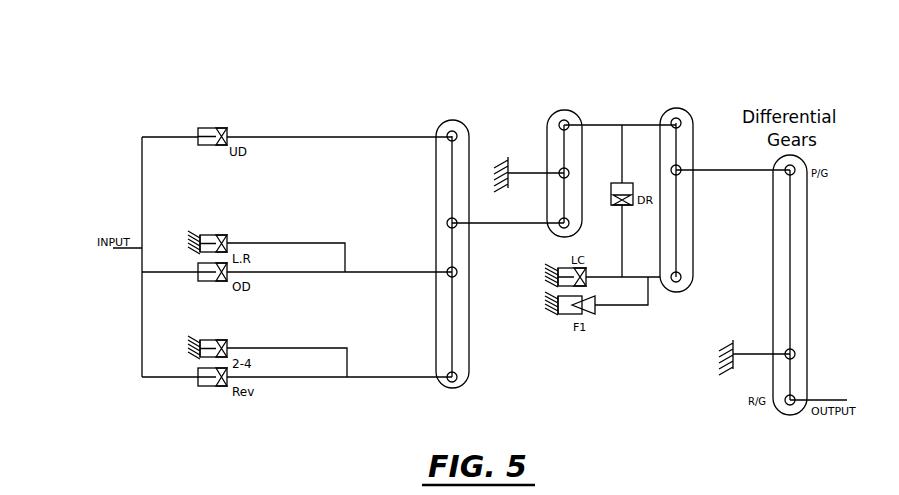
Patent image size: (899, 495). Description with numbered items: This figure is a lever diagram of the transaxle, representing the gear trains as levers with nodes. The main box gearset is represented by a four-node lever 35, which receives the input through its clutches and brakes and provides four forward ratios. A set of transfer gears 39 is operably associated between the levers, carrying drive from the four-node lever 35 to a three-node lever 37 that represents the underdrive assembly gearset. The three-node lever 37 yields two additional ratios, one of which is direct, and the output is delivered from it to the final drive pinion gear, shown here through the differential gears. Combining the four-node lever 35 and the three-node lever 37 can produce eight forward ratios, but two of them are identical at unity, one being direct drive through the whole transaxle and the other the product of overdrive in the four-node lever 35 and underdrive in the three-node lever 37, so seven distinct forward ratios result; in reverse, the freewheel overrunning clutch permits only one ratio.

The four-node lever 35 is at (439, 126).
The three-node lever 37 is at (695, 115).
The transfer gears 39 is at (546, 116).